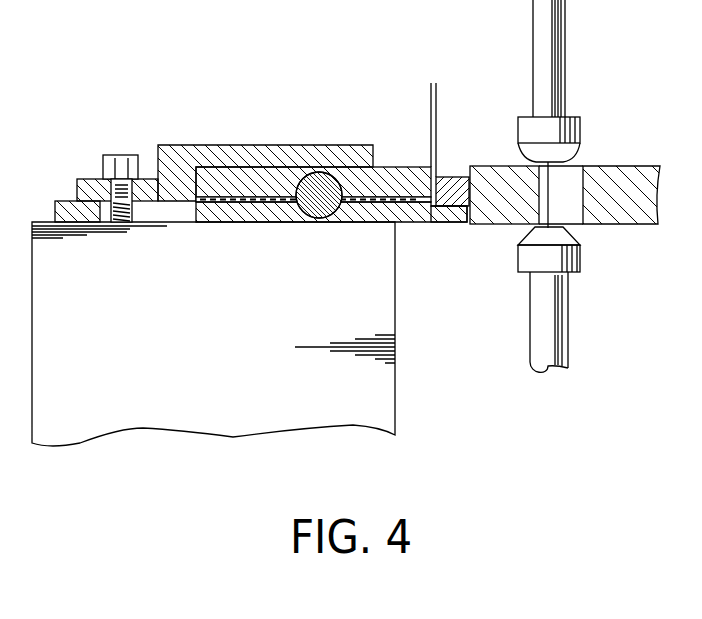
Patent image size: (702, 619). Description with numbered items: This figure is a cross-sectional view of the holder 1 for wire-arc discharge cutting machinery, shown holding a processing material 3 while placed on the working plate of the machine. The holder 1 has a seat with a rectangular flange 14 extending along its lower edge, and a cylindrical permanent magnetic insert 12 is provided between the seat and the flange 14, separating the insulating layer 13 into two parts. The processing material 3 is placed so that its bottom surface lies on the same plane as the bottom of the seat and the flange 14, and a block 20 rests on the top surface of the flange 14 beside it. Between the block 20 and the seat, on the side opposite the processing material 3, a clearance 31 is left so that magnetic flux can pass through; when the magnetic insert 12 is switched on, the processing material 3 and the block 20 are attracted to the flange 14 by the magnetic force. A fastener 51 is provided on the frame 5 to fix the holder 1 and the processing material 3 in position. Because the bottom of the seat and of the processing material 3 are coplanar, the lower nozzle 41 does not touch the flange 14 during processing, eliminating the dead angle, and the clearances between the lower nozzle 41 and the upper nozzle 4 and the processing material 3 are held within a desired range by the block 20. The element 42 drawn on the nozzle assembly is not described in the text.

The holder 1 is at (233, 178).
The processing material 3 is at (616, 185).
The upper nozzle 4 is at (540, 40).
The frame 5 is at (387, 312).
The permanent magnetic insert 12 is at (330, 147).
The insulating layer 13 is at (397, 195).
The flange 14 is at (442, 217).
The block 20 is at (453, 184).
The clearance 31 is at (458, 93).
The lower nozzle 41 is at (538, 305).
The collar 42 is at (542, 193).
The fastener 51 is at (190, 146).